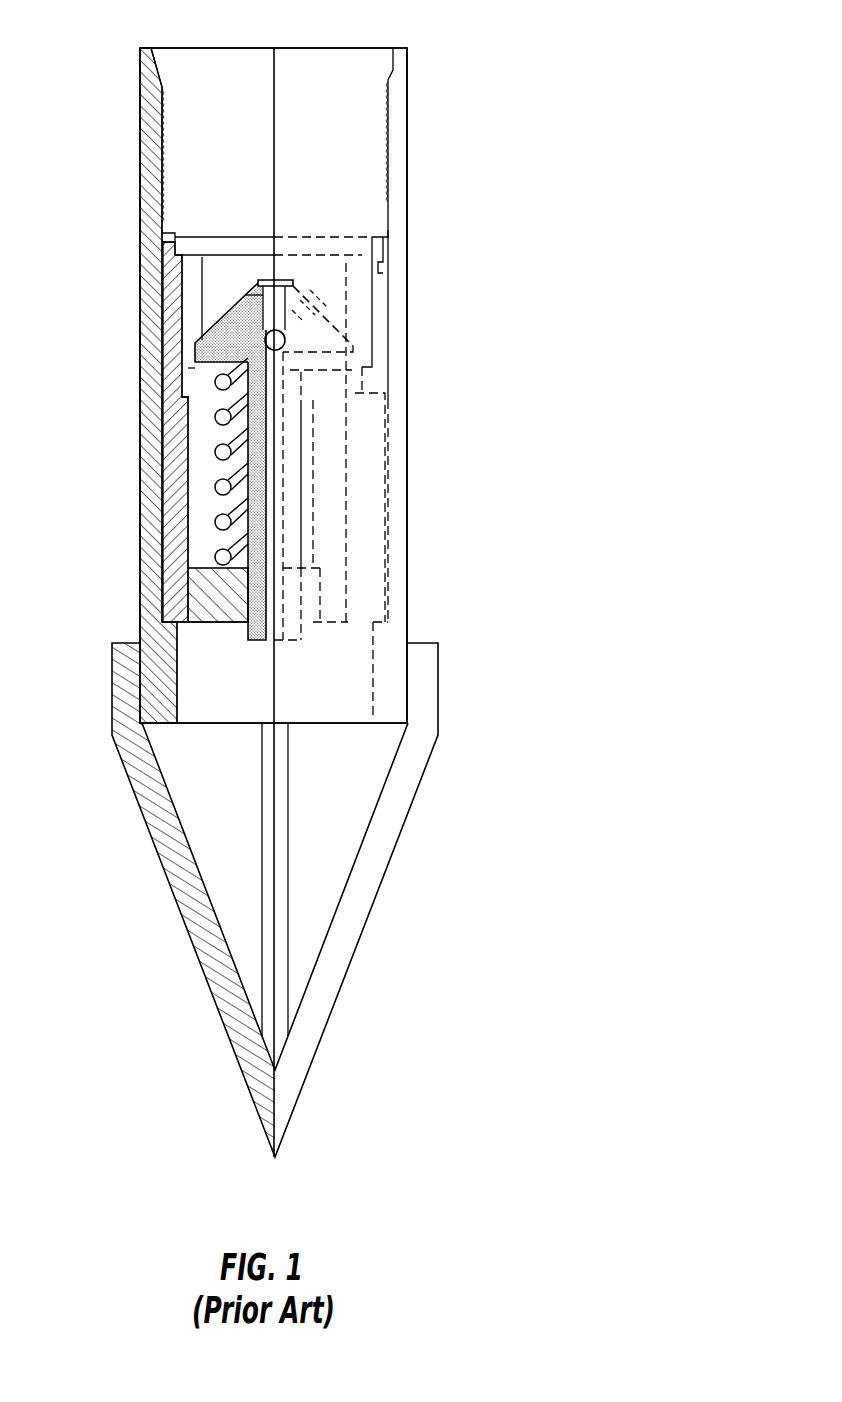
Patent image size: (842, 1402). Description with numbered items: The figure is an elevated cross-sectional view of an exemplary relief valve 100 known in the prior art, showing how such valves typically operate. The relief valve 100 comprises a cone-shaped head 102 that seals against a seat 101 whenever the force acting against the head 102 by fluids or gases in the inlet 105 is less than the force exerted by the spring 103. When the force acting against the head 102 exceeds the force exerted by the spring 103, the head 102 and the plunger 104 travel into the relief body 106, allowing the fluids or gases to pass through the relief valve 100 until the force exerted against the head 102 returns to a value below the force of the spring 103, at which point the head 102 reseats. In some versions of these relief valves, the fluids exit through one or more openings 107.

The relief valve 100 is at (596, 84).
The seat 101 is at (188, 322).
The cone-shaped head 102 is at (335, 326).
The spring 103 is at (200, 490).
The plunger 104 is at (248, 538).
The inlet 105 is at (313, 63).
The relief body 106 is at (333, 530).
The openings 107 is at (390, 863).